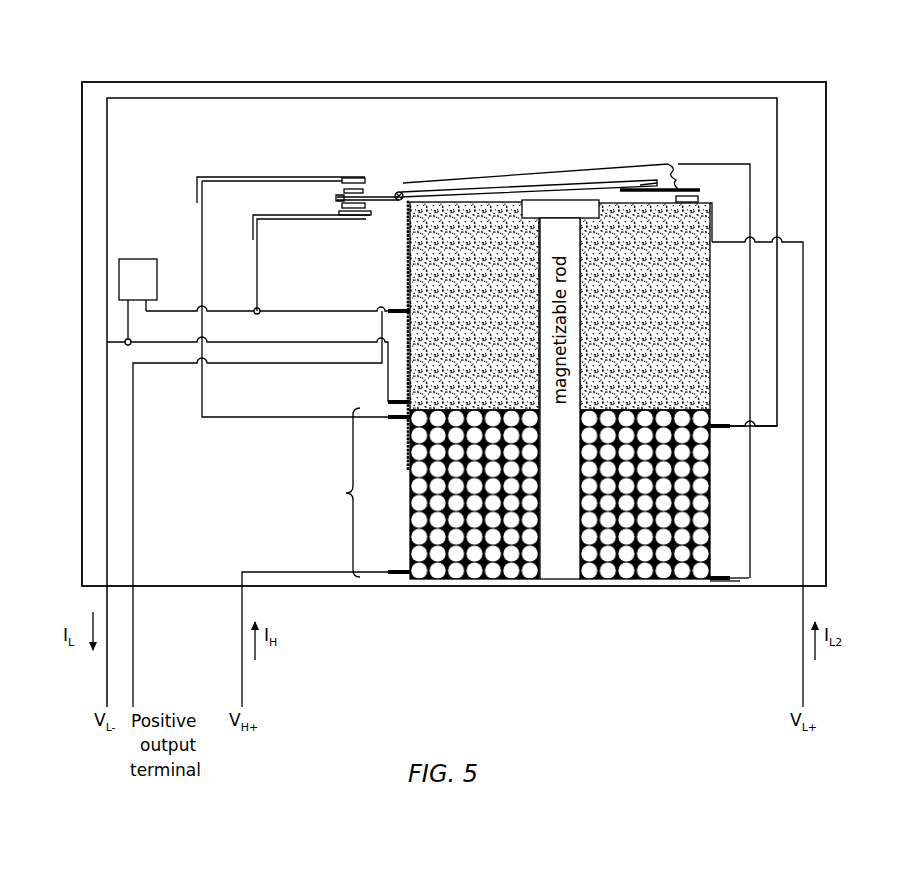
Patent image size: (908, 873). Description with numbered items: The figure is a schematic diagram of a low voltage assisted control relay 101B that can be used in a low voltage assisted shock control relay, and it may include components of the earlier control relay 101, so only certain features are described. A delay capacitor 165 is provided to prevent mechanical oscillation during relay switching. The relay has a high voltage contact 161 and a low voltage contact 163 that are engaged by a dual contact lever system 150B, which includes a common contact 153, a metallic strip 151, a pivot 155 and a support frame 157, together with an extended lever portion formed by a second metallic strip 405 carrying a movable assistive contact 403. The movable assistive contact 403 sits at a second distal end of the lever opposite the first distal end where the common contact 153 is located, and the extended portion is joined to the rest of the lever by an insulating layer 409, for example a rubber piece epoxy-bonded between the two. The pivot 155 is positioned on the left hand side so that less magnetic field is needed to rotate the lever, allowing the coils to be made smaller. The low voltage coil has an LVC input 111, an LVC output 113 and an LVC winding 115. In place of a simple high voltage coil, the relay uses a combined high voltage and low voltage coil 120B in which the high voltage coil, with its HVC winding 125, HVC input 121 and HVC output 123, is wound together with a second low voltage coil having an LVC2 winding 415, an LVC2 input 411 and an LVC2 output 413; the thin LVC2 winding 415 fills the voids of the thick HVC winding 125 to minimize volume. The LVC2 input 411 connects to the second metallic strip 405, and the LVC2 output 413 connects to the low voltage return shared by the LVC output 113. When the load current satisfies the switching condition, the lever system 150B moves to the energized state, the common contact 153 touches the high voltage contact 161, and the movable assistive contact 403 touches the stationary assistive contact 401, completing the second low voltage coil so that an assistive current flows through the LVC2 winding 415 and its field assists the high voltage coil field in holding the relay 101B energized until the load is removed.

The control relay 101 is at (862, 82).
The low voltage assisted control relay 101B is at (458, 78).
The delay capacitor 165 is at (136, 258).
The high voltage contact 161 is at (343, 178).
The common contact 153 is at (356, 189).
The low voltage contact 163 is at (340, 213).
The pivot 155 is at (401, 192).
The metallic strip 151 is at (563, 181).
The dual contact lever system 150B is at (522, 164).
The insulating layer 409 is at (640, 190).
The second metallic strip 405 is at (678, 170).
The movable assistive contact 403 is at (690, 190).
The stationary assistive contact 401 is at (715, 215).
The LVC winding 115 is at (712, 320).
The HVC winding 125 is at (412, 483).
The support frame 157 is at (406, 228).
The LVC input 111 is at (386, 310).
The LVC output 113 is at (385, 404).
The HVC output 123 is at (386, 420).
The HVC input 121 is at (399, 585).
The combined high voltage and low voltage coil 120B is at (326, 492).
The LVC2 output 413 is at (728, 430).
The LVC2 winding 415 is at (710, 566).
The LVC2 input 411 is at (721, 586).